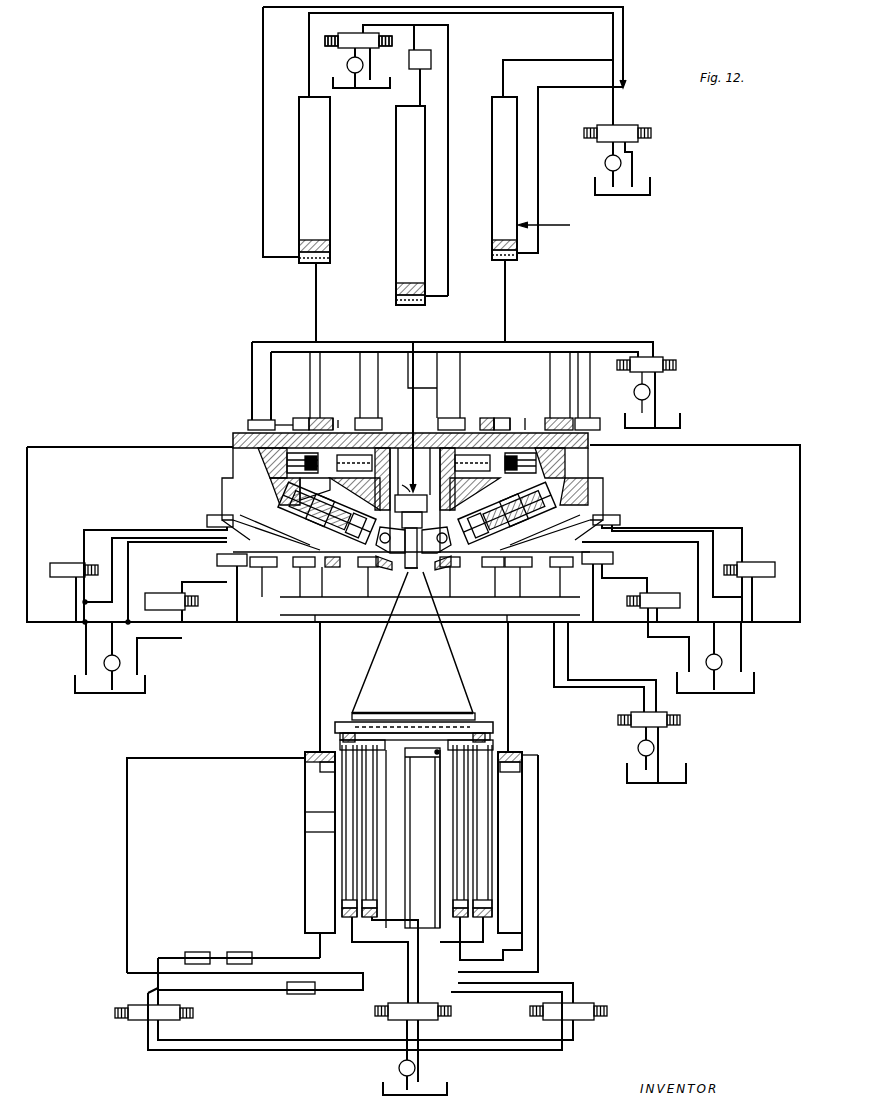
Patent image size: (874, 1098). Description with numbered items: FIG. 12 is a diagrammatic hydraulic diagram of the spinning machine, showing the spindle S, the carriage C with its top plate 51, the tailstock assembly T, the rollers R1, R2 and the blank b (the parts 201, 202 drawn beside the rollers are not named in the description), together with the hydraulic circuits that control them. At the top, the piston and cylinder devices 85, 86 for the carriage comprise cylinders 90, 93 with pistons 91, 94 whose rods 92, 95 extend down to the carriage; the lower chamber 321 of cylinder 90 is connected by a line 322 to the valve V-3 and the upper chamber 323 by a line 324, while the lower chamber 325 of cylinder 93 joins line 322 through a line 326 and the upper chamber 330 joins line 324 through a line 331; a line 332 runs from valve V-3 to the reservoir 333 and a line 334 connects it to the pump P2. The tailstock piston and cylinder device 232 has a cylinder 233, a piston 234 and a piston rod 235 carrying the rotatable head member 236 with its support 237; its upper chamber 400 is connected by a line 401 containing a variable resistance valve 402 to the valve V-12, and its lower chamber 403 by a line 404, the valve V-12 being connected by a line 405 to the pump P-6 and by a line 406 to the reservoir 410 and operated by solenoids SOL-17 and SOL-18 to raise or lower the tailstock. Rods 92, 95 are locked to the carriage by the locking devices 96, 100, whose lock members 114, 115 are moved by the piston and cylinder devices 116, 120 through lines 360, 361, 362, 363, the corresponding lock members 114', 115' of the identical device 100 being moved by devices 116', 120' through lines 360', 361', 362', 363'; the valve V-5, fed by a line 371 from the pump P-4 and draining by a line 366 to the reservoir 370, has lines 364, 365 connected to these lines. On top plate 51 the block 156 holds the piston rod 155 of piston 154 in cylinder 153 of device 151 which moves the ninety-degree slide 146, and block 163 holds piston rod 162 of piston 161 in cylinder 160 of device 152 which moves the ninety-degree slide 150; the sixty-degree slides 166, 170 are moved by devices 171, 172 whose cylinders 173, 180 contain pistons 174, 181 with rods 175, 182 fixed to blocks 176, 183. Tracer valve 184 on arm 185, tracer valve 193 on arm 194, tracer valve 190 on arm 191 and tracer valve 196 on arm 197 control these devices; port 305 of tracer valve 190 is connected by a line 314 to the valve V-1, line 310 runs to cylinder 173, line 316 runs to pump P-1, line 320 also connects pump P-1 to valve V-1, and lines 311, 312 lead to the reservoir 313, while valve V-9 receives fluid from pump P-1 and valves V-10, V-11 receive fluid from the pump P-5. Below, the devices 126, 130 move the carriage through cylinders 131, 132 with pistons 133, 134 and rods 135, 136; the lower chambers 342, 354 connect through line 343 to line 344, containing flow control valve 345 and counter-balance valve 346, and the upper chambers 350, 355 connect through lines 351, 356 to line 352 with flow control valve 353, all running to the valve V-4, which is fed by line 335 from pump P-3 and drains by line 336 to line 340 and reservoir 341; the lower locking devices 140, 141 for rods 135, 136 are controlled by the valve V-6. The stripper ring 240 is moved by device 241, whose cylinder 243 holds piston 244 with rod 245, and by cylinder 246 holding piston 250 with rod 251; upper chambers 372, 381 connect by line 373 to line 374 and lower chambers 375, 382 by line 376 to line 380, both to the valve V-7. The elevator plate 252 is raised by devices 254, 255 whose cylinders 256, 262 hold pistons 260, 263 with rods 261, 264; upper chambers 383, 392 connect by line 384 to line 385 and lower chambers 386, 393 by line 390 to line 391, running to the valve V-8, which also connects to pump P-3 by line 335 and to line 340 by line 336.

The pipe line 322 is at (263, 100).
The pipe line 324 is at (309, 34).
The hydraulic cylinder 85 is at (296, 182).
The cylinder 90 is at (330, 146).
The cylinder head 323 is at (302, 102).
The piston 91 is at (305, 244).
The piston seal 321 is at (299, 259).
The piston rod 92 is at (316, 286).
The hydraulic cylinder 232 is at (393, 197).
The cylinder 400 is at (396, 224).
The piston 233 is at (396, 242).
The piston seal 234 is at (398, 294).
The pipe line 403 is at (440, 300).
The pipe line 404 is at (448, 188).
The pipe line 401 is at (421, 82).
The flow control valve 402 is at (431, 58).
The solenoid valve V-12 is at (358, 40).
The solenoid SOL-17 is at (326, 40).
The solenoid SOL-18 is at (392, 40).
The pipe line 405 is at (354, 52).
The pipe line 406 is at (371, 62).
The pump P-6 is at (353, 75).
The reservoir 410 is at (355, 100).
The cylinder 330 is at (497, 110).
The cylinder 93 is at (492, 150).
The pipe line 331 is at (530, 60).
The pipe line 326 is at (540, 104).
The hydraulic cylinder 86 is at (554, 226).
The piston 94 is at (517, 246).
The piston seal 325 is at (512, 262).
The piston rod 95 is at (505, 308).
The solenoid valve V-3 is at (584, 134).
The pipe line 334 is at (611, 150).
The pump P2 is at (605, 164).
The pipe line 332 is at (634, 165).
The reservoir 333 is at (650, 190).
The manifold 360 is at (444, 380).
The pipe 361 is at (297, 385).
The pipe 362 is at (344, 384).
The pipe 363 is at (393, 385).
The rod 235 is at (413, 395).
The pipe 360' is at (426, 370).
The pipe 361' is at (465, 385).
The pipe 362' is at (543, 385).
The block 116 is at (237, 416).
The connector 96 is at (286, 420).
The block 114 is at (295, 408).
The block 115 is at (325, 408).
The pin 154 is at (330, 445).
The block 120 is at (369, 407).
The block 116' is at (453, 411).
The block 160 is at (482, 418).
The pin 161 is at (488, 448).
The block 114' is at (501, 412).
The block 100 is at (520, 418).
The block 115' is at (552, 412).
The block 120' is at (595, 391).
The pipe 365 is at (615, 326).
The pipe 364 is at (650, 327).
The solenoid valve V-5 is at (617, 364).
The pipe 363' is at (610, 381).
The pipe 371 is at (640, 392).
The pump P-4 is at (652, 392).
The pipe 366 is at (656, 382).
The reservoir 370 is at (680, 419).
The plate 51 is at (233, 439).
The carriage C is at (230, 470).
The support 156 is at (260, 462).
The support 163 is at (575, 455).
The bearing 162 is at (575, 466).
The bearing 153 is at (318, 462).
The shaft 151 is at (375, 452).
The shaft 152 is at (470, 460).
The block 155 is at (300, 486).
The block 176 is at (318, 495).
The wall 171 is at (388, 490).
The wall 172 is at (440, 500).
The tool T is at (401, 485).
The wedge 146 is at (360, 479).
The wedge 150 is at (470, 479).
The cylinder 175 is at (292, 518).
The piston 174 is at (335, 512).
The cylinder 181 is at (480, 510).
The piston 182 is at (515, 512).
The block 183 is at (555, 490).
The block 184 is at (212, 514).
The arm 185 is at (234, 522).
The block 193 is at (616, 514).
The arm 194 is at (556, 532).
The block 237 is at (411, 503).
The block 236 is at (414, 520).
The stem 305 is at (397, 548).
The roller 201 is at (391, 541).
The roller 202 is at (436, 541).
The roller R1 is at (389, 573).
The roller R2 is at (441, 573).
The bead b is at (412, 640).
The block 190 is at (215, 558).
The pipe 310 is at (240, 548).
The pipe 191 is at (234, 570).
The block 140 is at (296, 566).
The block 173 is at (365, 570).
The block 180 is at (462, 577).
The block 141 is at (524, 568).
The block 196 is at (614, 558).
The pipe 197 is at (610, 547).
The pipe 316 is at (128, 577).
The pipe 314 is at (210, 582).
The solenoid valve V-9 is at (90, 565).
The pipe 320 is at (118, 610).
The solenoid valve V-1 is at (192, 604).
The pipe 311 is at (202, 626).
The pipe 312 is at (150, 640).
The pump P-1 is at (105, 660).
The reservoir 313 is at (145, 684).
The solenoid valve V-10 is at (730, 565).
The solenoid valve V-11 is at (628, 604).
The pump P-5 is at (723, 660).
The solenoid valve V-6 is at (618, 720).
The rod 166 is at (385, 610).
The rod 170 is at (452, 610).
The shell S is at (412, 681).
The rod 135 is at (320, 681).
The rod 136 is at (508, 693).
The plate 373 is at (380, 728).
The plate 240 is at (330, 726).
The block 252 is at (348, 733).
The housing 350 is at (306, 755).
The head 355 is at (514, 752).
The head 133 is at (302, 762).
The cylinder 241 is at (305, 790).
The cylinder 126 is at (300, 812).
The cylinder 372 is at (342, 824).
The piston 131 is at (335, 838).
The cylinder 342 is at (362, 853).
The rod 245 is at (350, 866).
The rod 243 is at (373, 886).
The piston 244 is at (342, 902).
The piston 375 is at (342, 914).
The pipe 343 is at (316, 956).
The rod 254 is at (380, 788).
The column 384 is at (425, 834).
The wall 392 is at (440, 786).
The cylinder 255 is at (450, 800).
The rod 383 is at (380, 822).
The pipe 385 is at (440, 828).
The rod 256 is at (380, 864).
The rod 262 is at (440, 862).
The piston 261 is at (377, 870).
The piston 264 is at (440, 878).
The piston 260 is at (377, 886).
The piston 263 is at (440, 897).
The piston 386 is at (377, 903).
The piston 393 is at (440, 912).
The pipe 374 is at (372, 926).
The pipe 390 is at (440, 922).
The pipe 376 is at (386, 950).
The cylinder 356 is at (522, 798).
The head 134 is at (522, 768).
The rod 246 is at (522, 786).
The pipe 130 is at (538, 817).
The cylinder 381 is at (546, 831).
The piston 132 is at (522, 843).
The rod 251 is at (468, 859).
The piston 250 is at (492, 899).
The piston 382 is at (492, 914).
The pipe 354 is at (530, 940).
The pipe 344 is at (252, 952).
The valve 345 is at (190, 952).
The valve 346 is at (230, 952).
The pipe 351 is at (127, 788).
The pipe 352 is at (148, 990).
The valve 353 is at (298, 994).
The solenoid valve V-4 is at (115, 1012).
The pipe 336 is at (282, 1030).
The pipe 335 is at (204, 1052).
The solenoid valve V-7 is at (375, 1012).
The pipe 380 is at (420, 990).
The pipe 391 is at (573, 980).
The solenoid valve V-8 is at (532, 1012).
The pump P-3 is at (398, 1070).
The pipe 340 is at (420, 1060).
The reservoir 341 is at (447, 1090).